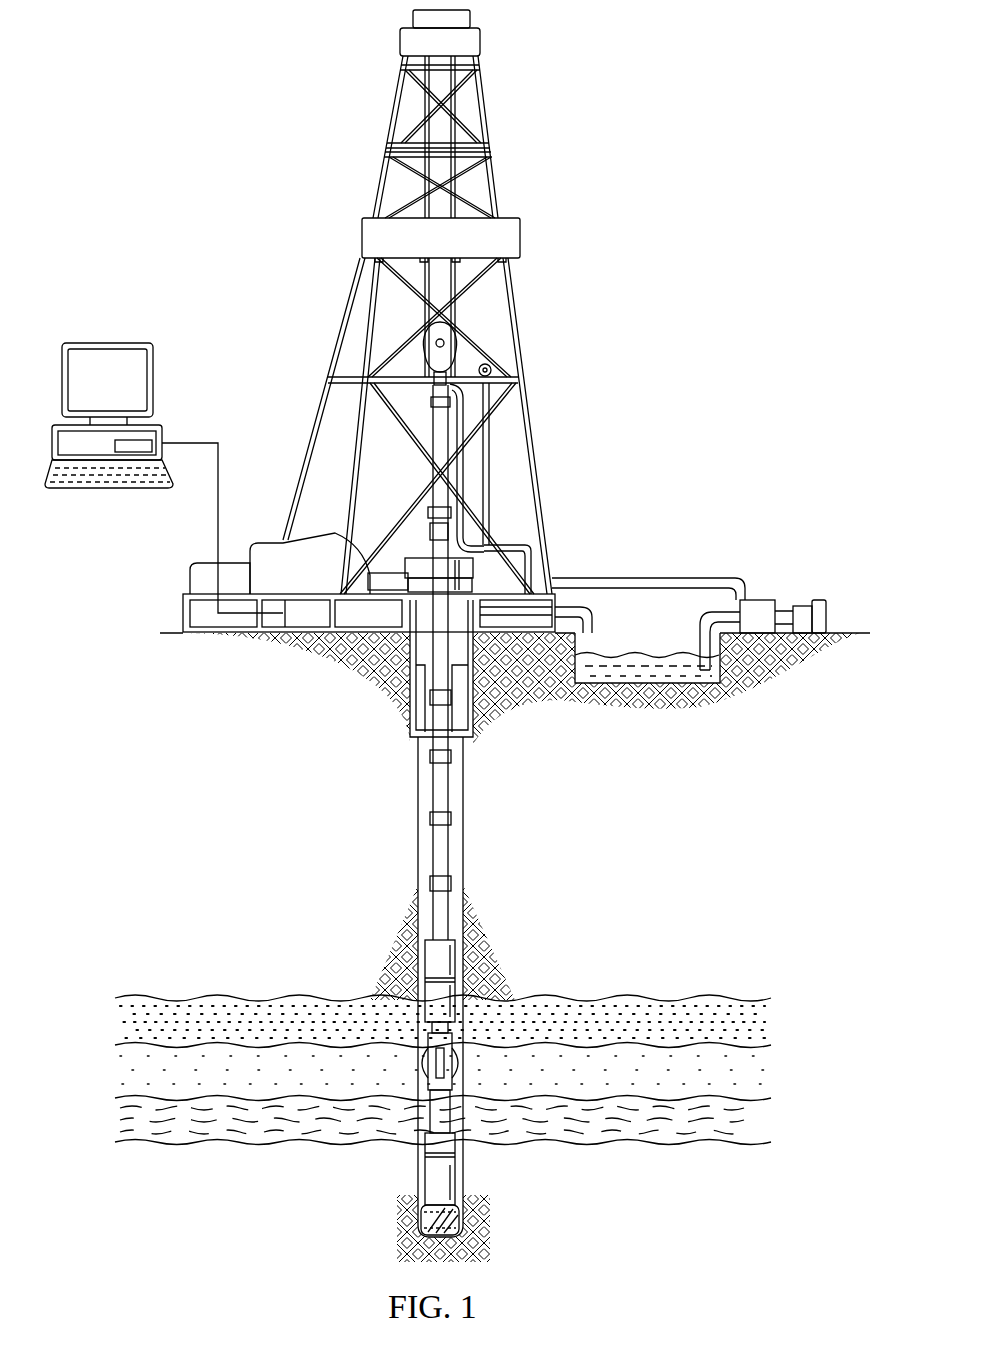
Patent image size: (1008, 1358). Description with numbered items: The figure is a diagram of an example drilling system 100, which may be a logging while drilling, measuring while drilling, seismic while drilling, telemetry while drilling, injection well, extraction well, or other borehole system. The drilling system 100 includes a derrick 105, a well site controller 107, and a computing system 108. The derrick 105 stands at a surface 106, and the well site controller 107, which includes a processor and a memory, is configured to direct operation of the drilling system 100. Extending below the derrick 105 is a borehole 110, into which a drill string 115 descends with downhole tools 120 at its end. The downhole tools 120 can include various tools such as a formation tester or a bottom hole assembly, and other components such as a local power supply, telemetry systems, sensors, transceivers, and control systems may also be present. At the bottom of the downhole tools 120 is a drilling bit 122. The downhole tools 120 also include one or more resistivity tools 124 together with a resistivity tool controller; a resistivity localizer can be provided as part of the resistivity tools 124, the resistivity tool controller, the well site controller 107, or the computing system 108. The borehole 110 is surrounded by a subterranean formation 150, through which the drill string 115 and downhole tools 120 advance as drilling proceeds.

The drilling system 100 is at (222, 114).
The derrick 105 is at (518, 312).
The surface 106 is at (843, 633).
The well site controller 107 is at (303, 638).
The computing system 108 is at (107, 343).
The borehole 110 is at (418, 840).
The drill string 115 is at (449, 858).
The downhole tools 120 is at (557, 1133).
The drilling bit 122 is at (420, 1212).
The resistivity tools 124 is at (446, 1147).
The subterranean formation 150 is at (772, 1020).